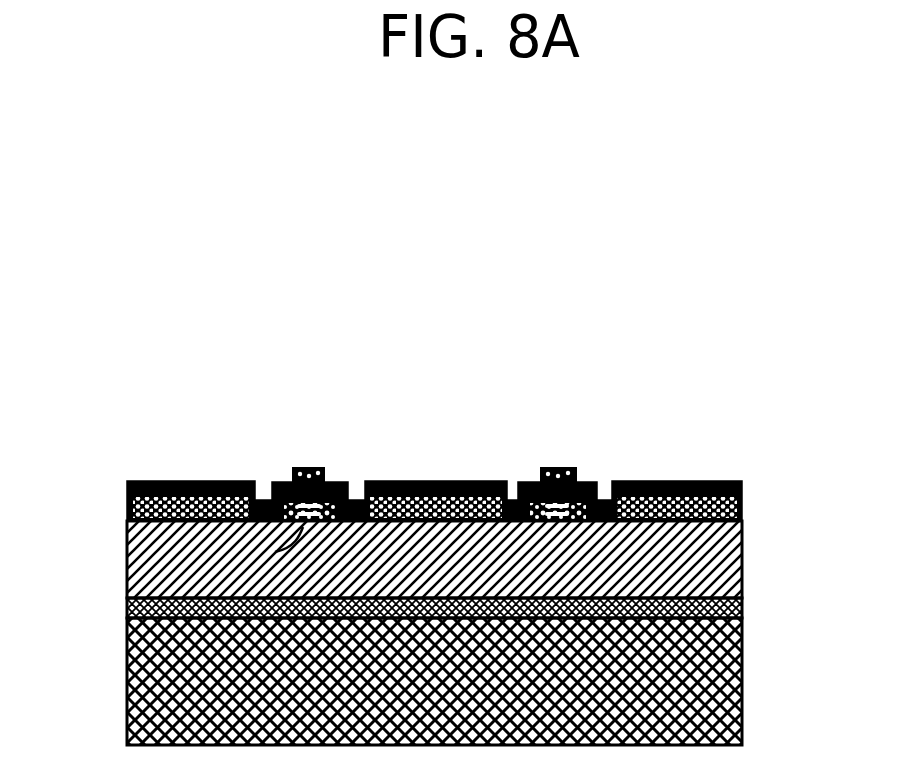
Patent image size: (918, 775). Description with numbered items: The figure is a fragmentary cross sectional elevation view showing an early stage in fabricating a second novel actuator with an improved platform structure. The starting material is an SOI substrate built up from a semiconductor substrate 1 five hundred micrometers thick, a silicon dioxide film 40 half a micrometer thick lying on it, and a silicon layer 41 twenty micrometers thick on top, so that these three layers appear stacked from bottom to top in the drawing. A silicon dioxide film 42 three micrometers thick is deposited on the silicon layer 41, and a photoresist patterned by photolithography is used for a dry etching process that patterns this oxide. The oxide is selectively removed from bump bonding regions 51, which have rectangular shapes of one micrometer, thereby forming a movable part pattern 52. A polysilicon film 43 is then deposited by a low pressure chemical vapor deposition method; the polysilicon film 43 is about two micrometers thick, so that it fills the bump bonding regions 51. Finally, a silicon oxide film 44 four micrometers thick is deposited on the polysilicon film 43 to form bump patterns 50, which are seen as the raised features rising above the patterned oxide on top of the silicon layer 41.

The semiconductor substrate 1 is at (742, 685).
The silicon dioxide film 40 is at (742, 607).
The silicon layer 41 is at (742, 560).
The silicon dioxide film 42 is at (742, 508).
The polysilicon film 43 is at (590, 480).
The silicon oxide film 44 is at (562, 478).
The bump patterns 50 is at (590, 448).
The bump bonding regions 51 is at (275, 552).
The movable part pattern 52 is at (343, 480).